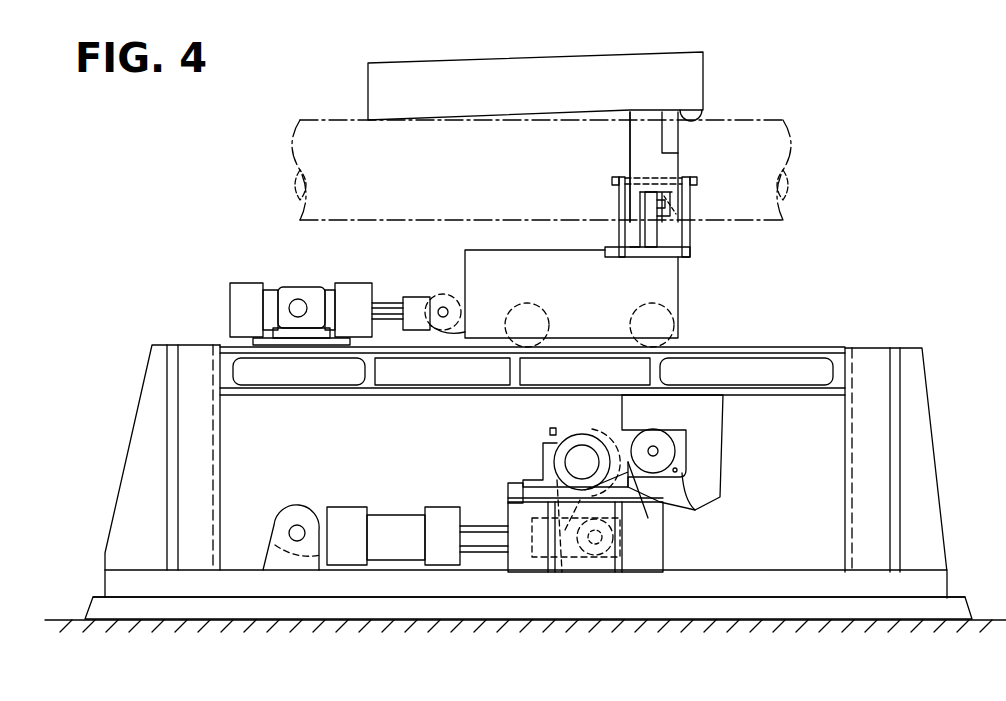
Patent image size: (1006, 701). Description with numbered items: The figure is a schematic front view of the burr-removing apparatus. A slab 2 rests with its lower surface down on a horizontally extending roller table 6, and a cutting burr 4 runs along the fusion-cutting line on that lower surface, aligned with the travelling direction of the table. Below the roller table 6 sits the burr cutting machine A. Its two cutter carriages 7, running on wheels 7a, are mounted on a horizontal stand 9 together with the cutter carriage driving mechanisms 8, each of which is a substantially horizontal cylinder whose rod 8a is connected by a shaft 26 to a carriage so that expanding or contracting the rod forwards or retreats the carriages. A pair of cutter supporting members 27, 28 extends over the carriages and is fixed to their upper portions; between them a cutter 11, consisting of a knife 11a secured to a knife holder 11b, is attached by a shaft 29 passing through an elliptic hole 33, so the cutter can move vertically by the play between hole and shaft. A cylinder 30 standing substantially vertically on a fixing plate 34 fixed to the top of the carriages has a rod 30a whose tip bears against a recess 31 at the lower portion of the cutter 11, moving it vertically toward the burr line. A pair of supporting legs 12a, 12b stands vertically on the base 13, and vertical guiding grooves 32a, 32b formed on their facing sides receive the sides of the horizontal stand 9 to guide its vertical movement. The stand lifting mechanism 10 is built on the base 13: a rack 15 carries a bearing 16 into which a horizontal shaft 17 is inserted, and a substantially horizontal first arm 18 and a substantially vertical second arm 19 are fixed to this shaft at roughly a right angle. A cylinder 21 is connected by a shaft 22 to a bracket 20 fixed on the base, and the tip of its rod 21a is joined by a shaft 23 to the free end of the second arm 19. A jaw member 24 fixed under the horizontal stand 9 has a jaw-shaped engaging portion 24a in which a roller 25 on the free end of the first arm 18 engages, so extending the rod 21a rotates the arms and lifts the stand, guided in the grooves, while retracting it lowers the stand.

The slab 2 is at (538, 62).
The cutting burr 4 is at (705, 115).
The roller table 6 is at (325, 115).
The cutter carriage 7 is at (668, 322).
The wheels 7a is at (515, 345).
The cutter carriage driving mechanism 8 is at (330, 288).
The rod 8a is at (392, 302).
The horizontal stand 9 is at (790, 347).
The stand lifting mechanism 10 is at (482, 460).
The cutter 11 is at (698, 175).
The knife 11a is at (672, 145).
The knife holder 11b is at (630, 137).
The supporting leg 12a is at (926, 442).
The supporting leg 12b is at (145, 432).
The base 13 is at (88, 597).
The rack 15 is at (655, 558).
The bearing 16 is at (545, 443).
The shaft 17 is at (575, 462).
The first arm 18 is at (650, 517).
The second arm 19 is at (568, 545).
The bracket 20 is at (270, 548).
The cylinder 21 is at (396, 515).
The rod 21a is at (485, 527).
The shaft 22 is at (297, 525).
The shaft 23 is at (596, 545).
The jaw member 24 is at (722, 440).
The jaw-shaped engaging portion 24a is at (690, 505).
The roller 25 is at (653, 445).
The shaft 26 is at (443, 307).
The cutter supporting member 27 is at (690, 210).
The cutter supporting member 28 is at (620, 212).
The shaft 29 is at (697, 184).
The cylinder 30 is at (646, 233).
The rod 30a is at (645, 200).
The recess 31 is at (658, 196).
The guiding groove 32a is at (848, 453).
The guiding groove 32b is at (215, 440).
The elliptic hole 33 is at (684, 222).
The fixing plate 34 is at (665, 258).
The burr cutting machine A is at (255, 243).